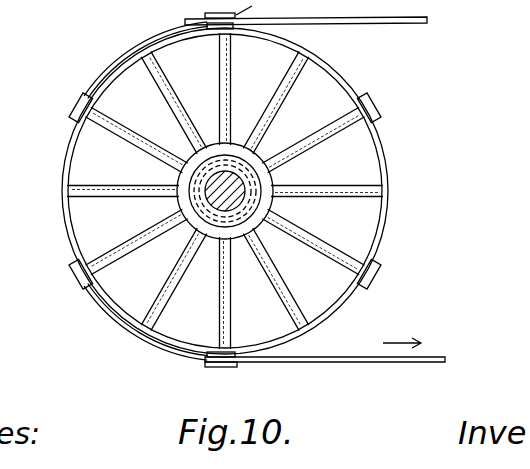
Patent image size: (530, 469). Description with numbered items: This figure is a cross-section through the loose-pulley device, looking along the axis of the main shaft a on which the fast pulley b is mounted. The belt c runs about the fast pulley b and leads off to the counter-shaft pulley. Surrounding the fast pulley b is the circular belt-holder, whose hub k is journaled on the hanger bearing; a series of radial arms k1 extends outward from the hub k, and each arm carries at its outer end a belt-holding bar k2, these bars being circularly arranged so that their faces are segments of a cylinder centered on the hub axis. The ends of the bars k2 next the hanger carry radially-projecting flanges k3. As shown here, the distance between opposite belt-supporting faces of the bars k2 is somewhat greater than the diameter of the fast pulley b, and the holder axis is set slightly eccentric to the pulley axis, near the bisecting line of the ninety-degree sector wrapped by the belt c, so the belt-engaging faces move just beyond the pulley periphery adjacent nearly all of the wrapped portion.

The hub k is at (157, 208).
The radial arms k1 is at (132, 142).
The belt-holding bars k2 is at (90, 102).
The radially-projecting flanges k3 is at (73, 95).
The main shaft a is at (247, 183).
The fast pulley b is at (386, 155).
The belt c is at (345, 18).